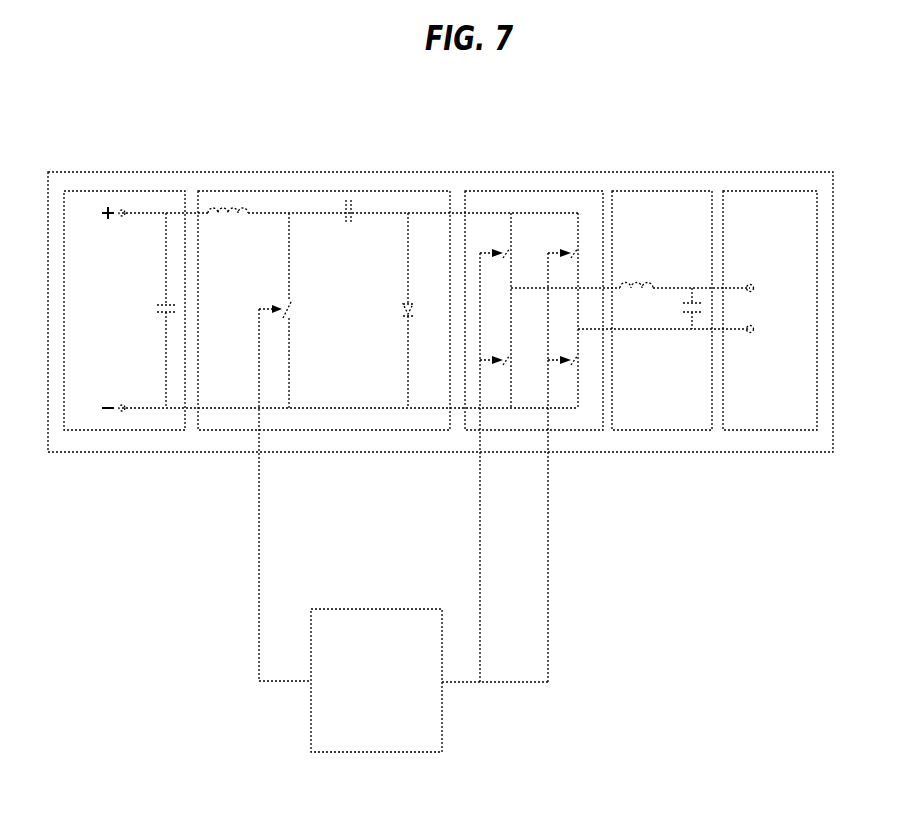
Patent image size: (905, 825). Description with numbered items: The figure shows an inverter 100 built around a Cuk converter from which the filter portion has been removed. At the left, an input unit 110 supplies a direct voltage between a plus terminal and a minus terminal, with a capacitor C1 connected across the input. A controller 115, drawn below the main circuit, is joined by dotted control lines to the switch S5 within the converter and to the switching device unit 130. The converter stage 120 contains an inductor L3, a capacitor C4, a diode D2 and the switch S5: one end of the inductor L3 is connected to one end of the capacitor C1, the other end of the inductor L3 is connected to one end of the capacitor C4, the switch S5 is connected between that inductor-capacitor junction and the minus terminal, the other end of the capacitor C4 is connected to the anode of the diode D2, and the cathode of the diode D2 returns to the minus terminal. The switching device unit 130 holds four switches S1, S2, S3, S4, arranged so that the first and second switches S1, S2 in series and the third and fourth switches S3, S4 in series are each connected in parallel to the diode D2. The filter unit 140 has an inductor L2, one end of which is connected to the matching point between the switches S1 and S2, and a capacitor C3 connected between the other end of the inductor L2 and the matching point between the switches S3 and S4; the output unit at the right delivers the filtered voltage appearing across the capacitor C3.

The power conversion apparatus 100 is at (447, 172).
The input unit 110 is at (122, 191).
The controller 115 is at (378, 609).
The boost converter unit 120 is at (320, 191).
The inverter unit 130 is at (530, 191).
The output unit 140 is at (770, 191).
The capacitor C1 is at (154, 310).
The inductor L3 is at (228, 229).
The boost switch S5 is at (287, 447).
The capacitor C4 is at (349, 227).
The diode D2 is at (393, 310).
The first switch S1 is at (508, 300).
The second switch S2 is at (508, 515).
The third switch S3 is at (574, 300).
The fourth switch S4 is at (574, 515).
The output inductor L2 is at (636, 270).
The output capacitor C3 is at (679, 308).